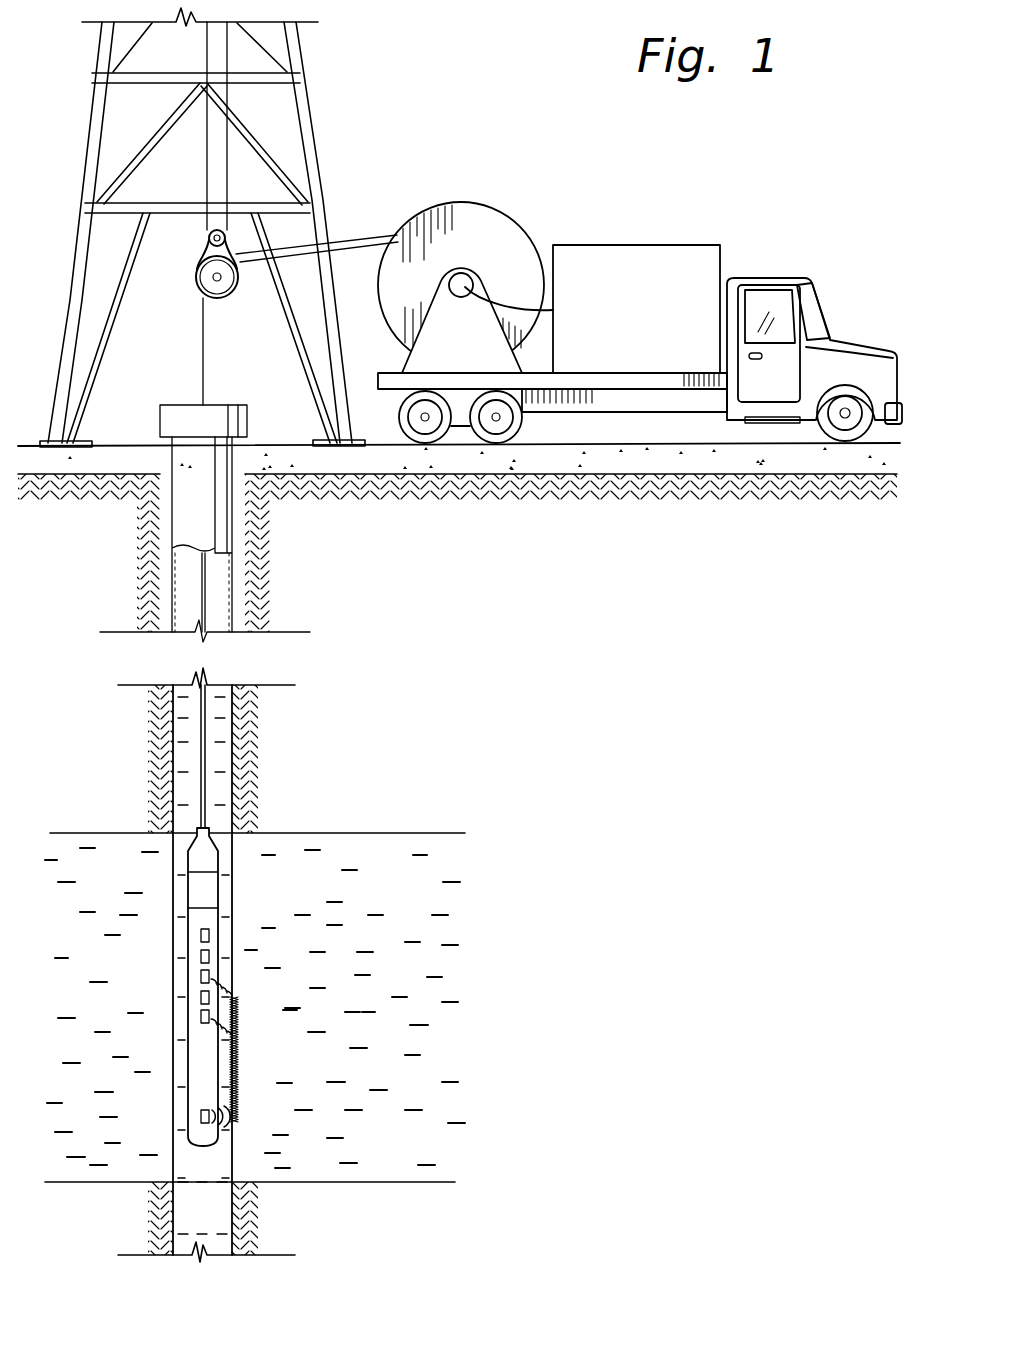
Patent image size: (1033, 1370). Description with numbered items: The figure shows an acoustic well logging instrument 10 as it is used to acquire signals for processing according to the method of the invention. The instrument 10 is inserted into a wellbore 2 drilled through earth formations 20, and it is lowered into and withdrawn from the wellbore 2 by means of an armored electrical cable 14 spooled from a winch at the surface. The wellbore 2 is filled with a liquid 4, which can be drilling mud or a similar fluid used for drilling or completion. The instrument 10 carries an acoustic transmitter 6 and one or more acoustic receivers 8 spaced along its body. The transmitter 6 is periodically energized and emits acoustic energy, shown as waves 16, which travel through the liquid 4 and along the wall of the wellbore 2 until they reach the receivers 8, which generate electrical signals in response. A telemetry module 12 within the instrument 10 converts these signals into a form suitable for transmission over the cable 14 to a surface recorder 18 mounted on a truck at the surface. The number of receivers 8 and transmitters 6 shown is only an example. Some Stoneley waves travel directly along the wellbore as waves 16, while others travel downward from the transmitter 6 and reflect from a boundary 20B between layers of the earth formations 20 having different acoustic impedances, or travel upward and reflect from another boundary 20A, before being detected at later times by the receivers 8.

The wellbore 2 is at (188, 1224).
The liquid 4 is at (210, 1218).
The acoustic transmitter 6 is at (201, 1117).
The acoustic receivers 8 is at (200, 1016).
The instrument 10 is at (204, 987).
The telemetry module 12 is at (210, 896).
The armored electrical cable 14 is at (205, 757).
The waves 16 is at (248, 983).
The surface recorder 18 is at (634, 243).
The earth formations 20 is at (373, 1012).
The boundary 20A is at (380, 835).
The boundary 20B is at (383, 1180).